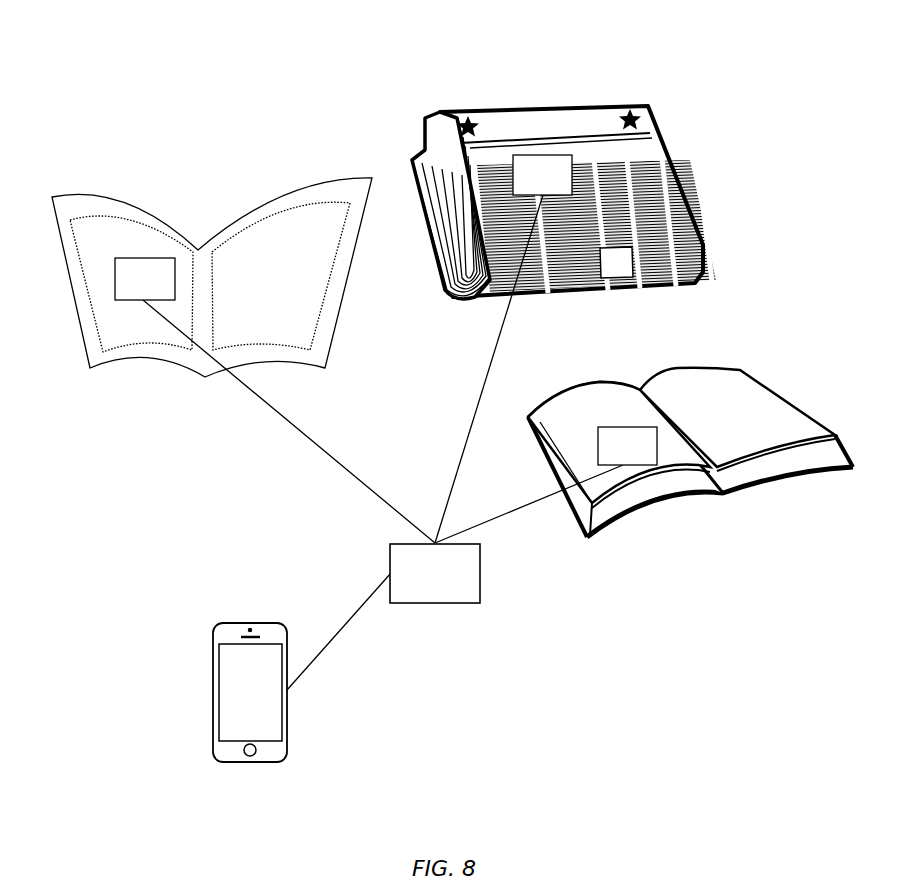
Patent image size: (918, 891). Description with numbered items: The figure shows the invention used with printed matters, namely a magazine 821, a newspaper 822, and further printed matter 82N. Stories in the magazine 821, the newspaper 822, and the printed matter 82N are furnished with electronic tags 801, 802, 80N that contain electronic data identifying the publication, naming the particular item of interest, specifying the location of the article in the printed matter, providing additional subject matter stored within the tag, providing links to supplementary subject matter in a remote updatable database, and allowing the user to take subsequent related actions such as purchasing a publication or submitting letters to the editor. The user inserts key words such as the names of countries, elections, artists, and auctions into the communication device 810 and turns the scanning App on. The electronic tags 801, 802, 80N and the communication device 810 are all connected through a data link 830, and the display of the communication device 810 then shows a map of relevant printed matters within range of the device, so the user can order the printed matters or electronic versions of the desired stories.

The magazine 821 is at (155, 218).
The newspaper 822 is at (525, 108).
The printed matter 82N is at (785, 400).
The electronic tag 801 is at (275, 400).
The electronic tag 802 is at (503, 349).
The electronic tag 80N is at (546, 485).
The communication device 810 is at (250, 620).
The data link 830 is at (443, 605).